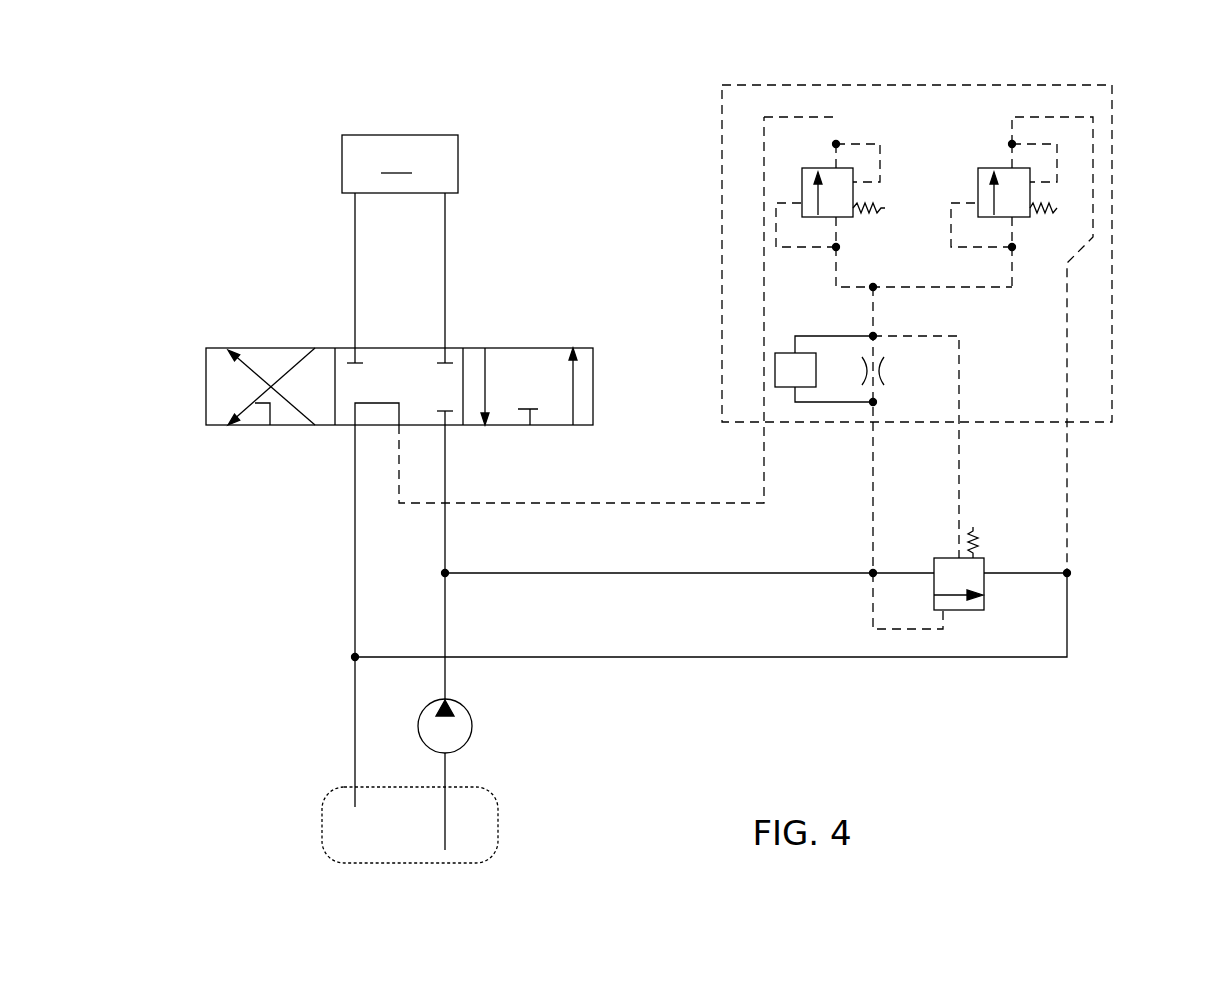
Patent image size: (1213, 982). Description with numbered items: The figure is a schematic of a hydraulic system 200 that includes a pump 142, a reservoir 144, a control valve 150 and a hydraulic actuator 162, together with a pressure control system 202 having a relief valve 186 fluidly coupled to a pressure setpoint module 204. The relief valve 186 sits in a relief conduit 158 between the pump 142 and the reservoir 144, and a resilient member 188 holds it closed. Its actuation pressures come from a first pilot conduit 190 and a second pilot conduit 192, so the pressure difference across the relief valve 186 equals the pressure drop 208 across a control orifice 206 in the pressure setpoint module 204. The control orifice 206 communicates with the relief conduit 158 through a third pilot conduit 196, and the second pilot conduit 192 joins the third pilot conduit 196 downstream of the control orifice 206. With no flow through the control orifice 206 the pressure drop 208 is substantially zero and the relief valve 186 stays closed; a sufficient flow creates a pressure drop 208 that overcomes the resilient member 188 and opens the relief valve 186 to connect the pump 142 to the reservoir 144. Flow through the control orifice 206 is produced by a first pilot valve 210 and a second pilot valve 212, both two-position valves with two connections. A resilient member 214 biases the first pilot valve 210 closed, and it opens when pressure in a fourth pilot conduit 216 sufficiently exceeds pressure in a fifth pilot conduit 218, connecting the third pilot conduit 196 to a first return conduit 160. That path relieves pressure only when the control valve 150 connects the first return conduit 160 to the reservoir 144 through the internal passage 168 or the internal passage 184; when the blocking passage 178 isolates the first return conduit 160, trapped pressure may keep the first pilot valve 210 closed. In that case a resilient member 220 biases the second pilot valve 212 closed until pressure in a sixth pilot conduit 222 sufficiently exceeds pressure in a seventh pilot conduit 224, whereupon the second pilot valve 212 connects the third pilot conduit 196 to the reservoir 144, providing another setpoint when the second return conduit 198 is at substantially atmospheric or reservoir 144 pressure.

The pump 142 is at (473, 726).
The reservoir 144 is at (500, 822).
The control valve 150 is at (531, 345).
The relief conduit 158 is at (763, 577).
The first return conduit 160 is at (636, 507).
The hydraulic actuator 162 is at (400, 241).
The internal passage 168 is at (355, 413).
The blocking passage 178 is at (538, 412).
The internal passage 184 is at (270, 407).
The relief valve 186 is at (978, 612).
The resilient member 188 is at (980, 535).
The first pilot conduit 190 is at (897, 632).
The second pilot conduit 192 is at (960, 503).
The third pilot conduit 196 is at (875, 320).
The second return conduit 198 is at (1068, 485).
The hydraulic system 200 is at (190, 545).
The pressure control system 202 is at (802, 712).
The pressure setpoint module 204 is at (702, 152).
The control orifice 206 is at (880, 375).
The pressure drop 208 is at (781, 352).
The first pilot valve 210 is at (840, 195).
The second pilot valve 212 is at (1017, 195).
The resilient member 214 is at (883, 210).
The fourth pilot conduit 216 is at (783, 202).
The fifth pilot conduit 218 is at (880, 147).
The resilient member 220 is at (1058, 208).
The sixth pilot conduit 222 is at (995, 248).
The seventh pilot conduit 224 is at (1058, 148).